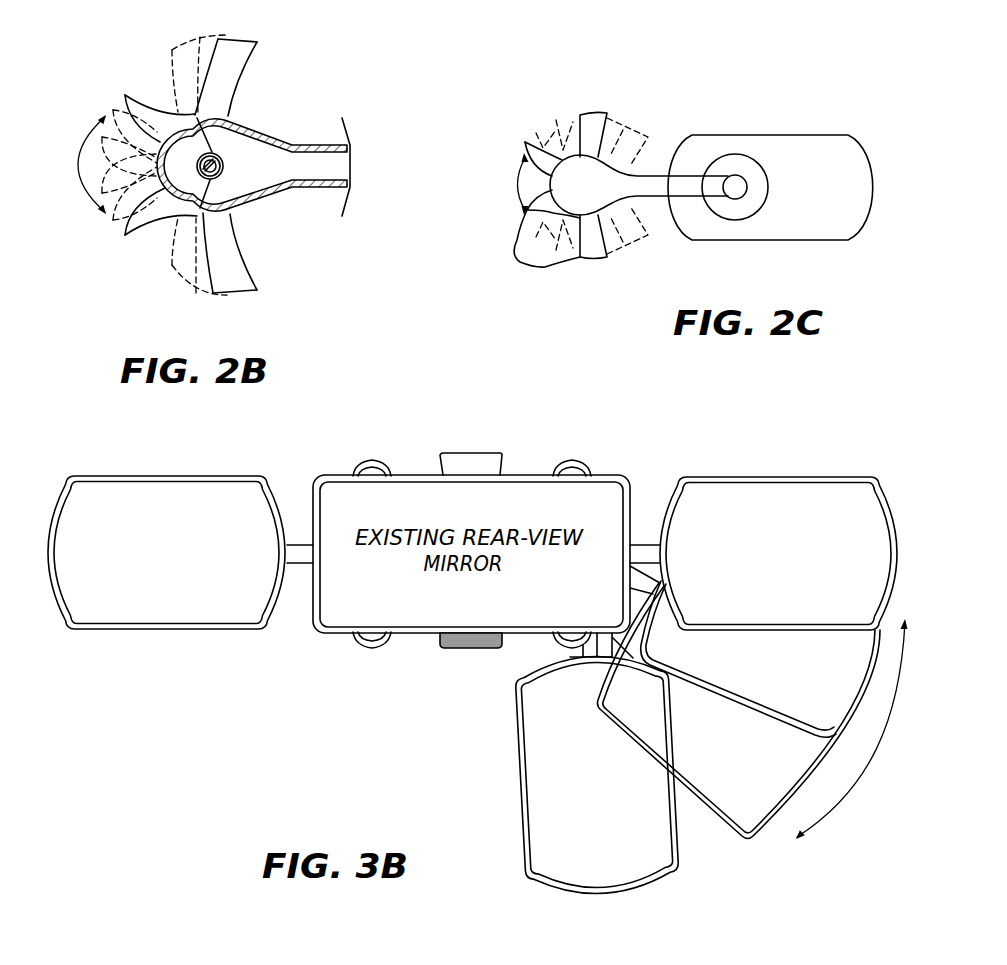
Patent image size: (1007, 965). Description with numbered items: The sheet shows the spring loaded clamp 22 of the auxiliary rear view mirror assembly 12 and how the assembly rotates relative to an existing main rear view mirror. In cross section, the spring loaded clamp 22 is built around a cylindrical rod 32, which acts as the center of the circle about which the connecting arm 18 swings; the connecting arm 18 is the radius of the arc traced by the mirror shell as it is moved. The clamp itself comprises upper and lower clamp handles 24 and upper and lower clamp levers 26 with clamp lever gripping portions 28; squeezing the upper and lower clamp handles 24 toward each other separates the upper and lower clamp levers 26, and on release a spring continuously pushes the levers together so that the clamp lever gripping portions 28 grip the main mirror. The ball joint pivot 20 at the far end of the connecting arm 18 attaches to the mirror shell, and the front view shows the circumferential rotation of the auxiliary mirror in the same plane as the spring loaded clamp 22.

In FIG. 3B, the auxiliary rear view mirror assembly 12 is at (740, 508).
In FIG. 2B, the connecting arm 18 is at (307, 130).
In FIG. 2C, the connecting arm 18 is at (655, 165).
In FIG. 3B, the connecting arm 18 is at (643, 530).
In FIG. 2C, the ball joint pivot 20 is at (747, 154).
In FIG. 2B, the spring loaded clamp 22 is at (151, 76).
In FIG. 2C, the spring loaded clamp 22 is at (543, 110).
In FIG. 2C, the upper and lower clamp handles 24 is at (515, 260).
In FIG. 2C, the upper and lower clamp levers 26 is at (598, 104).
In FIG. 2B, the clamp lever gripping portions 28 is at (277, 220).
In FIG. 3B, the clamp lever gripping portions 28 is at (570, 460).
In FIG. 2B, the cylindrical rod 32 is at (221, 158).